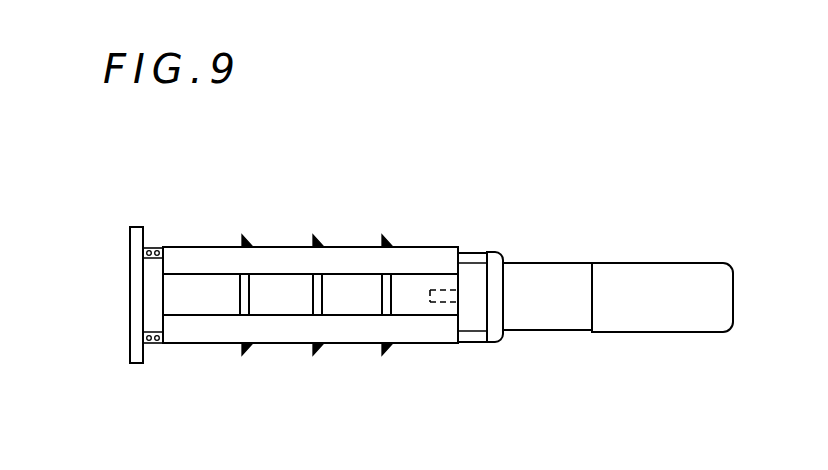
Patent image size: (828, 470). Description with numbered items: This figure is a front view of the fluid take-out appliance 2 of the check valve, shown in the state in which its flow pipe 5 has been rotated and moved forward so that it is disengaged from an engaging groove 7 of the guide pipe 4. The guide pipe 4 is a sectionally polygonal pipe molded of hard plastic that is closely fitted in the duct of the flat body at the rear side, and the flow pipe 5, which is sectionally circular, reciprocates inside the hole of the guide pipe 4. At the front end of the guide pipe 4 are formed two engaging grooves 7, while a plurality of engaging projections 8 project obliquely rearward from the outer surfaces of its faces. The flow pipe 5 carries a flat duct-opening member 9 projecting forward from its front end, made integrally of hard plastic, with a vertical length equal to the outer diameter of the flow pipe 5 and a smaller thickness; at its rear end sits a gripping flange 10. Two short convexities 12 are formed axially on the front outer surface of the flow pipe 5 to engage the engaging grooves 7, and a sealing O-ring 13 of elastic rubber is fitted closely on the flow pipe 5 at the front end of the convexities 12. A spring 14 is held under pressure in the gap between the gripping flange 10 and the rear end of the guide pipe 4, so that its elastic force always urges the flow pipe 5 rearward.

The fluid take-out appliance 2 is at (349, 245).
The guide pipe 4 is at (270, 257).
The flow pipe 5 is at (158, 285).
The engaging groove 7 is at (437, 288).
The engaging projection 8 is at (316, 281).
The duct-opening member 9 is at (660, 272).
The gripping flange 10 is at (137, 322).
The convexity 12 is at (475, 253).
The sealing O-ring 13 is at (497, 298).
The spring 14 is at (150, 247).